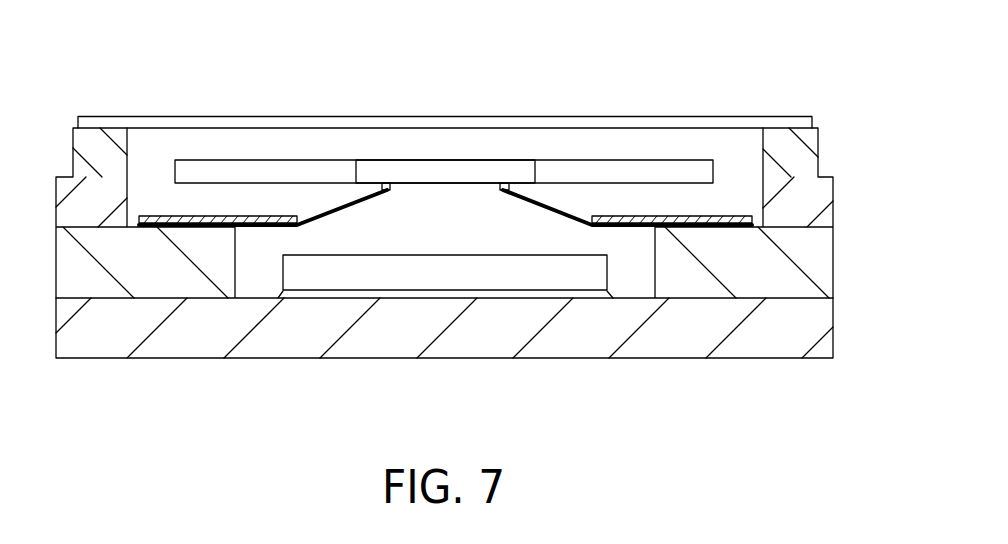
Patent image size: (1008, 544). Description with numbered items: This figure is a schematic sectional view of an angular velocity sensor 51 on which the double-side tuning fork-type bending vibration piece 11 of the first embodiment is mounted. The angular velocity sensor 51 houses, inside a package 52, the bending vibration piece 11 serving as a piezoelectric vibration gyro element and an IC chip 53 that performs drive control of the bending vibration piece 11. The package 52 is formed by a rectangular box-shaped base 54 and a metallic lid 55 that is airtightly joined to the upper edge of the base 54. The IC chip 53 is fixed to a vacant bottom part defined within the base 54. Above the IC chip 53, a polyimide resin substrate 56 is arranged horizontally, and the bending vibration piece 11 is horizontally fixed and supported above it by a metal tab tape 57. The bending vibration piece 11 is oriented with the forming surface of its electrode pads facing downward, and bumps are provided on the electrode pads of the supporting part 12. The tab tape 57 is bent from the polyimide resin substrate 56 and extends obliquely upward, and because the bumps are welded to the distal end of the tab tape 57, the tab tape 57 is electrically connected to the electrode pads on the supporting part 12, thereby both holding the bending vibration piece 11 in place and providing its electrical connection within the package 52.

The bending vibration piece 11 is at (232, 158).
The supporting part 12 is at (422, 158).
The angular velocity sensor 51 is at (485, 76).
The package 52 is at (836, 263).
The IC chip 53 is at (395, 255).
The base 54 is at (565, 358).
The metallic lid 55 is at (758, 117).
The polyimide resin substrate 56 is at (652, 215).
The tab tape 57 is at (341, 201).